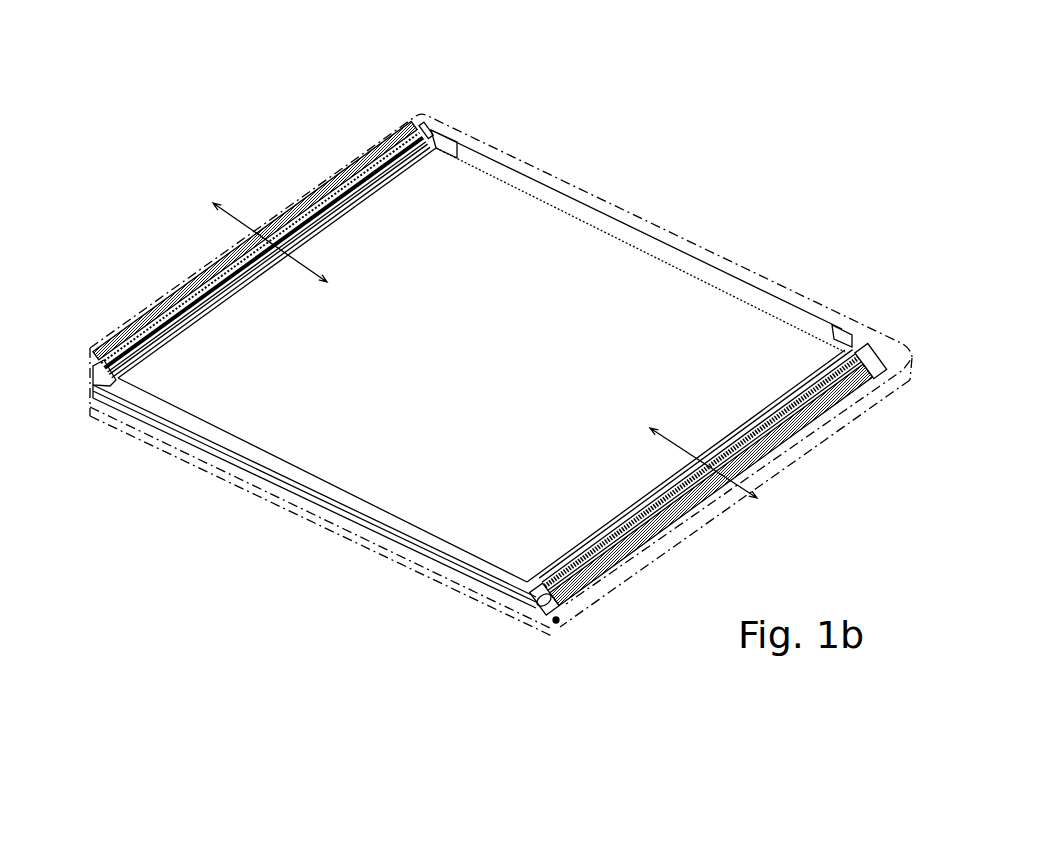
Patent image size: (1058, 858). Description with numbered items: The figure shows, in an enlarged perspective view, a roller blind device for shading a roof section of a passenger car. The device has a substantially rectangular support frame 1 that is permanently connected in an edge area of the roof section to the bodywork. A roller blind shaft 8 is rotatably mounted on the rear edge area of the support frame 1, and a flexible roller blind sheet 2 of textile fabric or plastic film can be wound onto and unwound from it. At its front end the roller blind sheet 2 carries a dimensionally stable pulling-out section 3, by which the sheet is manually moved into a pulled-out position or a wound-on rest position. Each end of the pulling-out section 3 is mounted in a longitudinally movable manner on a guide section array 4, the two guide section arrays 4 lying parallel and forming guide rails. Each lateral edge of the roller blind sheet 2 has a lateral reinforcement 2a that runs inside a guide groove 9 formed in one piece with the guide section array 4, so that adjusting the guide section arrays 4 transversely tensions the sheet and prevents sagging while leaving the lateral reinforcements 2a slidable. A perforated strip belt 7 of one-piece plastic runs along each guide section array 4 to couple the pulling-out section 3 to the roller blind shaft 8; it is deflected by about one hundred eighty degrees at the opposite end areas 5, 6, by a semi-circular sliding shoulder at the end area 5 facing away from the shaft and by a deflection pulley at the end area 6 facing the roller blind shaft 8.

The support frame 1 is at (197, 262).
The roller blind sheet 2 is at (492, 362).
The lateral reinforcement 2a is at (119, 380).
The pulling-out section 3 is at (483, 155).
The guide section array 4 is at (300, 208).
The end area 5 is at (422, 125).
The end area 6 is at (558, 624).
The perforated strip belt 7 is at (212, 290).
The roller blind shaft 8 is at (505, 578).
The guide groove 9 is at (314, 228).